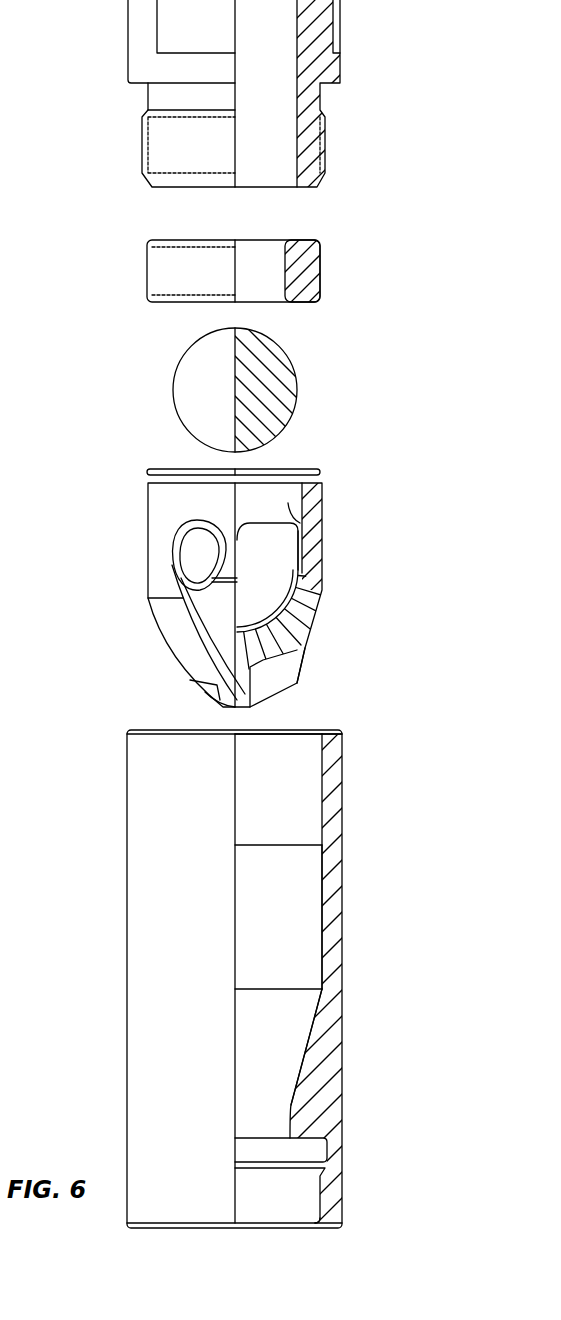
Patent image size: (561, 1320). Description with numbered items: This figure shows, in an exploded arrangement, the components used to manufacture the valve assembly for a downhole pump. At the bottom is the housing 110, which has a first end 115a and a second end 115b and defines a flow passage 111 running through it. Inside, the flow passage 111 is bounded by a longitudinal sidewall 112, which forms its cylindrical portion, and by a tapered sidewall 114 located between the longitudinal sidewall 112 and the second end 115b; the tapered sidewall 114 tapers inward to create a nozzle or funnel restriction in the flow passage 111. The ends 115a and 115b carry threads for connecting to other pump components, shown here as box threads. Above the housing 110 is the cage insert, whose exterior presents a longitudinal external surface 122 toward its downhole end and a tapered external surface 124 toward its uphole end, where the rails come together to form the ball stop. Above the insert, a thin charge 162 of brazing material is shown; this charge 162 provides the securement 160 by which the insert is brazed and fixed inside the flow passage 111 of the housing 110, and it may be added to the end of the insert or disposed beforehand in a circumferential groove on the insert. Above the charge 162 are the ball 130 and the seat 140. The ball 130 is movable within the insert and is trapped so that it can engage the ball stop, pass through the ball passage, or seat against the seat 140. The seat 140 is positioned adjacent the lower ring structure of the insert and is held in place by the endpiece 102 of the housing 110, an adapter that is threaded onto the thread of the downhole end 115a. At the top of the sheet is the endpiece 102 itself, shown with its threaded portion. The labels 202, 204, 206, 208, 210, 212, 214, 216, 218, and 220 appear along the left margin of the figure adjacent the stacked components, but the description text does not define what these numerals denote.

The endpiece 102 is at (340, 63).
The housing 110 is at (343, 862).
The flow passage 111 is at (297, 748).
The longitudinal sidewall 112 is at (316, 925).
The tapered sidewall 114 is at (312, 1012).
The first end 115a is at (316, 769).
The second end 115b is at (314, 1190).
The longitudinal external surface 122 is at (322, 558).
The tapered external surface 124 is at (312, 614).
The ball 130 is at (297, 393).
The seat 140 is at (322, 263).
The securement 160 is at (138, 449).
The charge 162 is at (308, 469).
The step 202 is at (28, 12).
The step 204 is at (28, 80).
The step 206 is at (28, 187).
The step 208 is at (28, 307).
The step 210 is at (28, 435).
The step 212 is at (28, 565).
The step 214 is at (28, 685).
The step 216 is at (28, 817).
The step 218 is at (28, 937).
The step 220 is at (28, 1055).